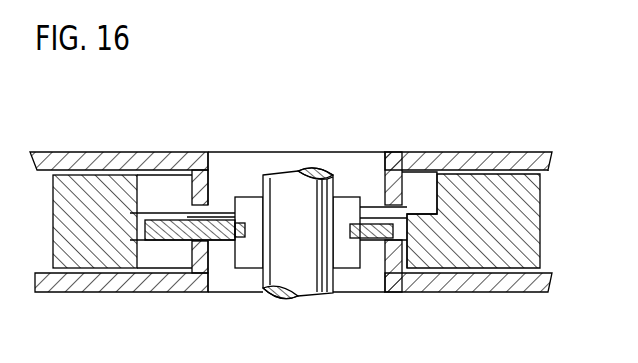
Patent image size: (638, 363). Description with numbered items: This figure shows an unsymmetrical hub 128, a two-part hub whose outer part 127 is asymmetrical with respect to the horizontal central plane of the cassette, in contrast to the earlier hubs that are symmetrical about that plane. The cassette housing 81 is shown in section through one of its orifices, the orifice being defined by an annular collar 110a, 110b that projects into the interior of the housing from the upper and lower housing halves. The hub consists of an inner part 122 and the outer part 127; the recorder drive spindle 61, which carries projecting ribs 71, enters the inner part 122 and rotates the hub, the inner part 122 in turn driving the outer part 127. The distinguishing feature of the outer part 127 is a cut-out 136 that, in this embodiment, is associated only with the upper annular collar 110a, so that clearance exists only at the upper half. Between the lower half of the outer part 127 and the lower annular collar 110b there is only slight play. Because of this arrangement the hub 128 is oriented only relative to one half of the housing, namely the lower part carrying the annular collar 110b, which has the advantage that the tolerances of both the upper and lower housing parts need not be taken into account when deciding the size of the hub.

The recorder drive spindle 61 is at (280, 177).
The projecting ribs 71 is at (348, 197).
The cassette housing 81 is at (512, 160).
The upper annular collar 110a is at (387, 186).
The lower annular collar 110b is at (386, 262).
The inner part 122 is at (219, 241).
The outer part 127 is at (477, 183).
The unsymmetrical hub 128 is at (556, 203).
The cut-out 136 is at (423, 185).